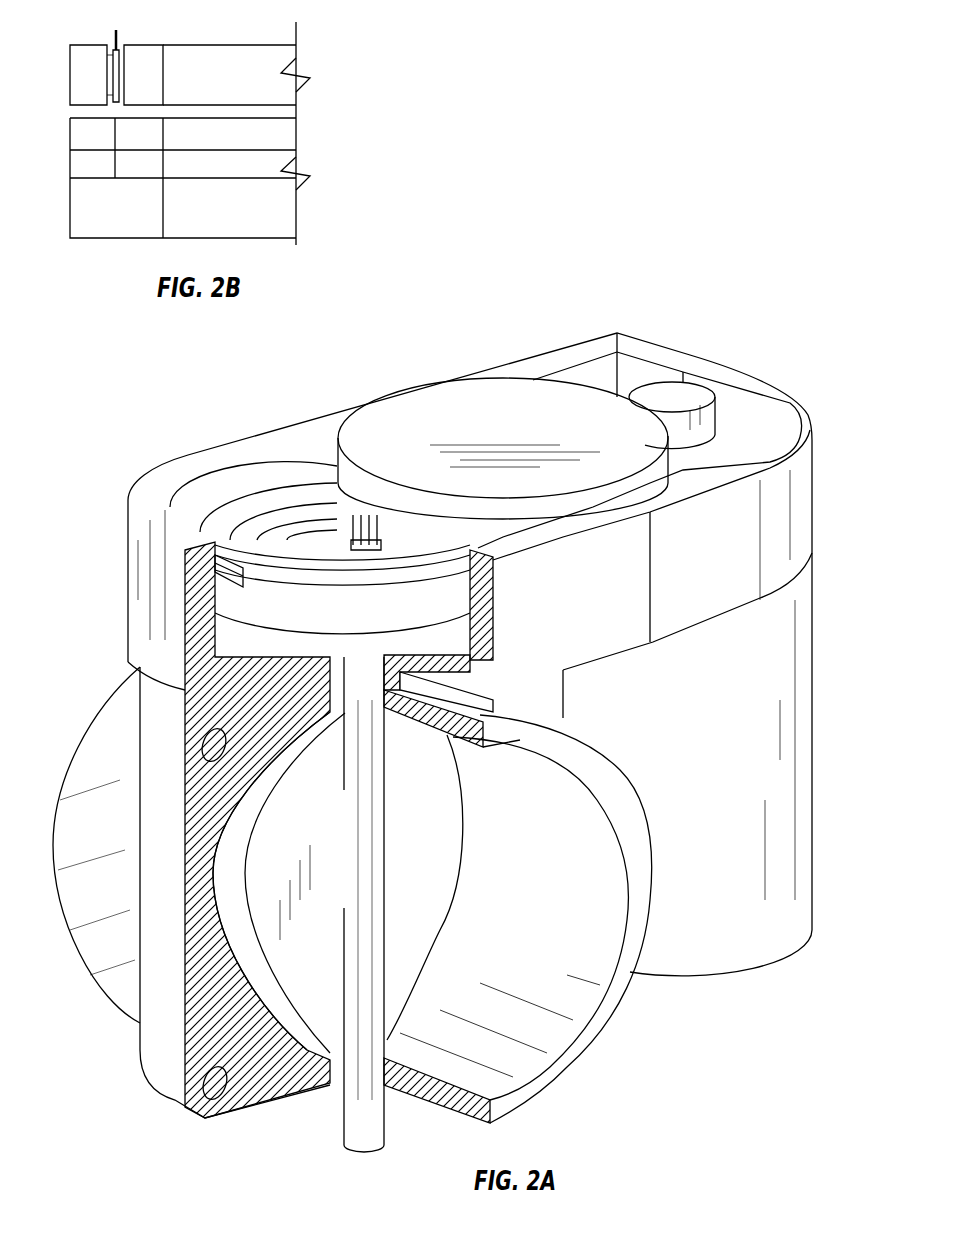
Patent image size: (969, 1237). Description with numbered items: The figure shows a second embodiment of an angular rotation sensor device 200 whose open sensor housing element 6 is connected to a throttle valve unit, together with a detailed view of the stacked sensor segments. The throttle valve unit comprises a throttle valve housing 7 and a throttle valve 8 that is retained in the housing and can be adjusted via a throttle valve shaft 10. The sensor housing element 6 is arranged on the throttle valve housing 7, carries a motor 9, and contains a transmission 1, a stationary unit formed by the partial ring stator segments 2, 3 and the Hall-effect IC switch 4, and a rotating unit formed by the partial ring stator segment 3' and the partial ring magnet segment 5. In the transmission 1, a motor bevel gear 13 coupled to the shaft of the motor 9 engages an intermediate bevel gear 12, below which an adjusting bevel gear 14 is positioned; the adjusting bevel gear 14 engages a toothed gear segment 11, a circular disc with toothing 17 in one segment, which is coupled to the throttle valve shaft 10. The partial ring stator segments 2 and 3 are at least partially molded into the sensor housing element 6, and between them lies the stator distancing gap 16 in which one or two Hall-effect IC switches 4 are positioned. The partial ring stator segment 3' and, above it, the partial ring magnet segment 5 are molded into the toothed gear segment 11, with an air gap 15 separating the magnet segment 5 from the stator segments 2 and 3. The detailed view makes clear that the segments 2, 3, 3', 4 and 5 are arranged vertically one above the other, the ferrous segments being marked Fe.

In FIG. 2A, the transmission 1 is at (401, 413).
In FIG. 2B, the partial ring stator segment 2 is at (72, 72).
In FIG. 2A, the partial ring stator segment 2 is at (250, 530).
In FIG. 2B, the partial ring stator segment 3 is at (158, 62).
In FIG. 2A, the partial ring stator segment 3 is at (256, 481).
In FIG. 2B, the partial ring stator segment 3' is at (160, 212).
In FIG. 2A, the partial ring stator segment 3' is at (164, 584).
In FIG. 2B, the Hall-effect IC switch 4 is at (117, 30).
In FIG. 2A, the Hall-effect IC switch 4 is at (350, 530).
In FIG. 2B, the partial ring magnet segment 5 is at (70, 135).
In FIG. 2A, the partial ring magnet segment 5 is at (200, 530).
In FIG. 2B, the sensor housing element 6 is at (297, 68).
In FIG. 2A, the sensor housing element 6 is at (133, 550).
In FIG. 2A, the throttle valve housing 7 is at (593, 1027).
In FIG. 2A, the throttle valve 8 is at (440, 938).
In FIG. 2A, the motor 9 is at (735, 958).
In FIG. 2A, the throttle valve shaft 10 is at (378, 1142).
In FIG. 2B, the toothed gear segment 11 is at (297, 163).
In FIG. 2A, the intermediate bevel gear 12 is at (460, 398).
In FIG. 2A, the motor bevel gear 13 is at (702, 395).
In FIG. 2A, the adjusting bevel gear 14 is at (460, 398).
In FIG. 2B, the air gap 15 is at (72, 113).
In FIG. 2A, the air gap 15 is at (222, 592).
In FIG. 2B, the stator distancing gap 16 is at (112, 44).
In FIG. 2A, the stator distancing gap 16 is at (308, 543).
In FIG. 2A, the toothing 17 is at (400, 617).
In FIG. 2A, the angular rotation sensor device 200 is at (695, 323).